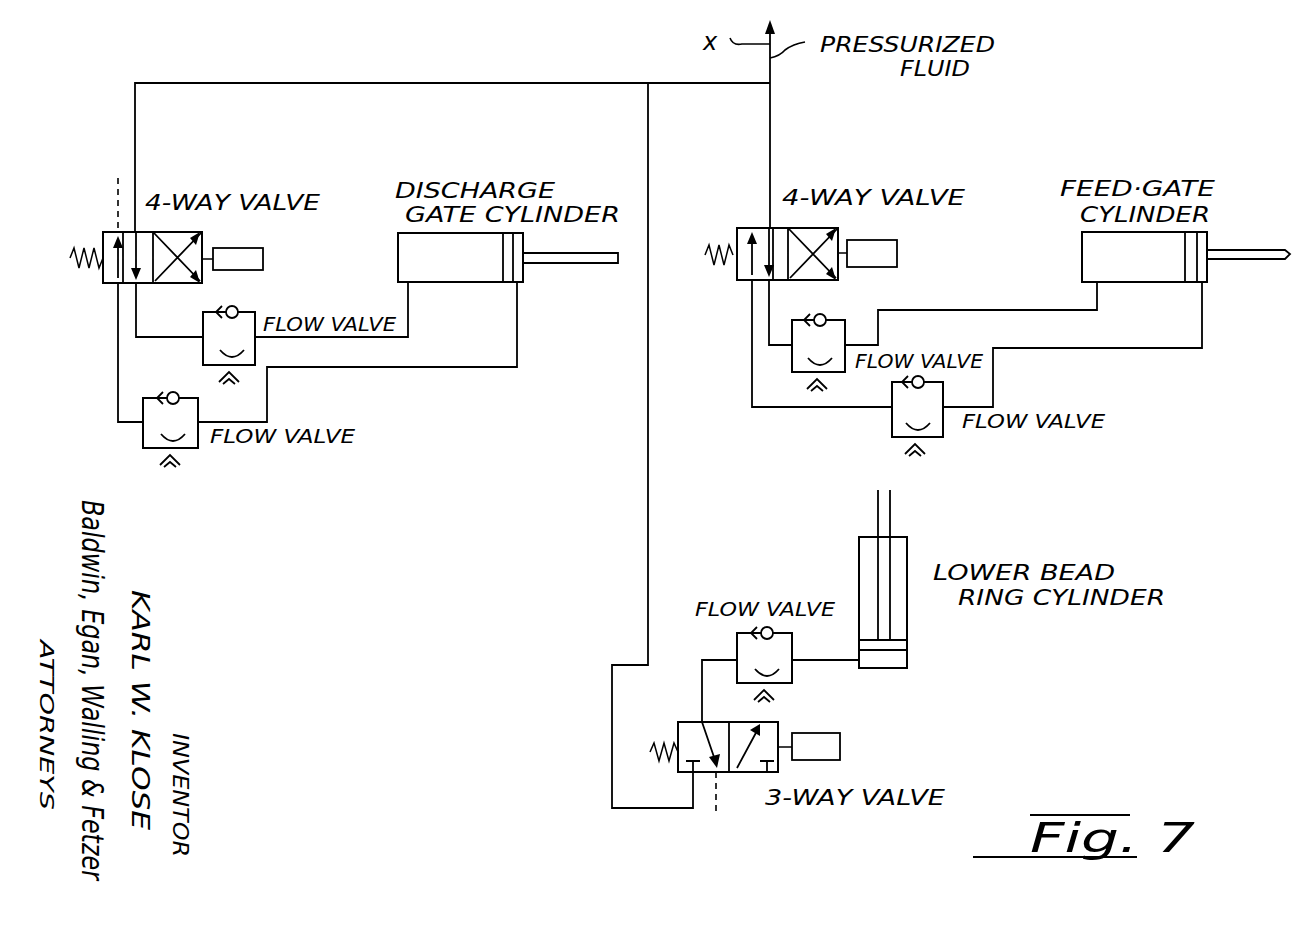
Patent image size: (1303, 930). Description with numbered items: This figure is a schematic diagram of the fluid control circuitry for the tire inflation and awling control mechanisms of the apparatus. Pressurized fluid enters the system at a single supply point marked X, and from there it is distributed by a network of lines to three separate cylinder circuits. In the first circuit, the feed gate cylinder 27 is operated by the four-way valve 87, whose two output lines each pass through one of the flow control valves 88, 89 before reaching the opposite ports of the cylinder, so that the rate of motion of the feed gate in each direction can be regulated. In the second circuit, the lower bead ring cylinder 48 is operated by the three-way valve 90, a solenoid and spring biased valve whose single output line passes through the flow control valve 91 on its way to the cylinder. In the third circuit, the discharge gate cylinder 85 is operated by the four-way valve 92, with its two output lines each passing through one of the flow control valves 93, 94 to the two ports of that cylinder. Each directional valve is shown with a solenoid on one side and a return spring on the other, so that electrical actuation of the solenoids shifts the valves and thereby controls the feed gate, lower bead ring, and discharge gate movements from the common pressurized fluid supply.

The four-way valve 92 is at (110, 232).
The flow control valve 93 is at (143, 436).
The flow control valve 94 is at (255, 350).
The discharge gate cylinder 85 is at (465, 265).
The four-way valve 87 is at (838, 232).
The flow control valve 88 is at (845, 318).
The flow control valve 89 is at (892, 422).
The feed gate cylinder 27 is at (1155, 265).
The three-way valve 90 is at (778, 722).
The flow control valve 91 is at (792, 641).
The lower bead ring cylinder 48 is at (907, 630).